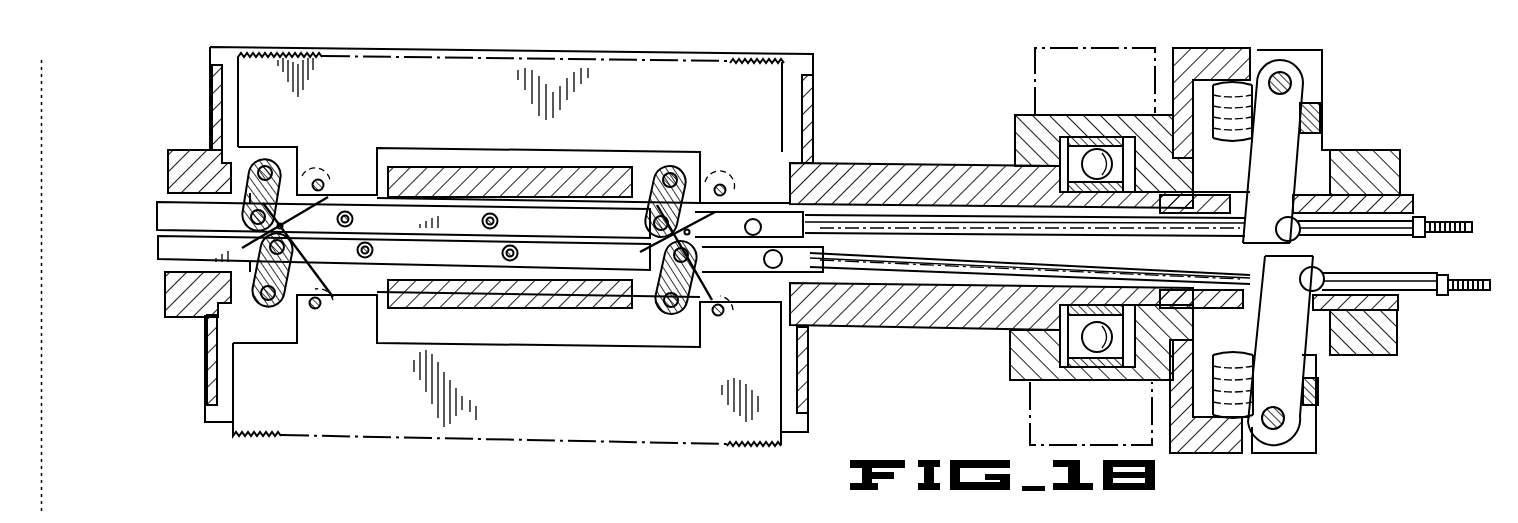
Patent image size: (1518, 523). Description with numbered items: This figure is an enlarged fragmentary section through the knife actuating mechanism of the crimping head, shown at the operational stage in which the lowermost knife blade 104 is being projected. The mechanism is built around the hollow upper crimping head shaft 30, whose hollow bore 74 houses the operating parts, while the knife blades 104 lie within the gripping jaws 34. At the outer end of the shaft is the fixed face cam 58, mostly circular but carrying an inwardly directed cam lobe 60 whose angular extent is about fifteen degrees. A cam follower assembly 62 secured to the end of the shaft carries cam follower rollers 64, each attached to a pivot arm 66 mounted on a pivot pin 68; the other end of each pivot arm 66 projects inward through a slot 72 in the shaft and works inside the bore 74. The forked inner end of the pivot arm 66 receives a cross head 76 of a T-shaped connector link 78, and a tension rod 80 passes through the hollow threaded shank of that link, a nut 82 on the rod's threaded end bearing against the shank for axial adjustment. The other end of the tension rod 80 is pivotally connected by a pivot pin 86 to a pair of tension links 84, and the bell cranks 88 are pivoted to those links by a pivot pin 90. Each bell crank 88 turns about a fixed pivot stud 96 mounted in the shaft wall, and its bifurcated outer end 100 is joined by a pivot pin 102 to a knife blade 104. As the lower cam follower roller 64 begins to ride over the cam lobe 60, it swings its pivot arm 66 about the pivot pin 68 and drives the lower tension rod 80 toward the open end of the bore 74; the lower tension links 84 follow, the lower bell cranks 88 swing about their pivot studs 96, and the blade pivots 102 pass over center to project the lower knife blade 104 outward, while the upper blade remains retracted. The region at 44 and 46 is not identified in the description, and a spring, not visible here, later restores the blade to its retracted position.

The upper crimping head shaft 30 is at (903, 326).
The gripping jaws 34 is at (814, 107).
The motor (phantom) 44 is at (1035, 55).
The bearing housing 46 is at (1015, 137).
The face cam 58 is at (1188, 50).
The cam lobe 60 is at (1192, 418).
The cam follower assembly 62 is at (1341, 73).
The cam follower roller 64 is at (1247, 117).
The pivot arm 66 is at (1285, 169).
The pivot pin 68 is at (1292, 85).
The slot 72 is at (1310, 200).
The hollow bore 74 is at (1211, 261).
The cross head 76 is at (1298, 237).
The connector link 78 is at (1375, 249).
The tension rod 80 is at (992, 230).
The nut 82 is at (1425, 240).
The tension links 84 is at (478, 232).
The pivot pin 86 is at (764, 260).
The bell crank 88 is at (285, 165).
The pivot pin 90 is at (248, 249).
The fixed pivot stud 96 is at (265, 166).
The bifurcated outer end 100 is at (297, 240).
The pivot pin 102 is at (322, 182).
The knife blade 104 is at (520, 115).